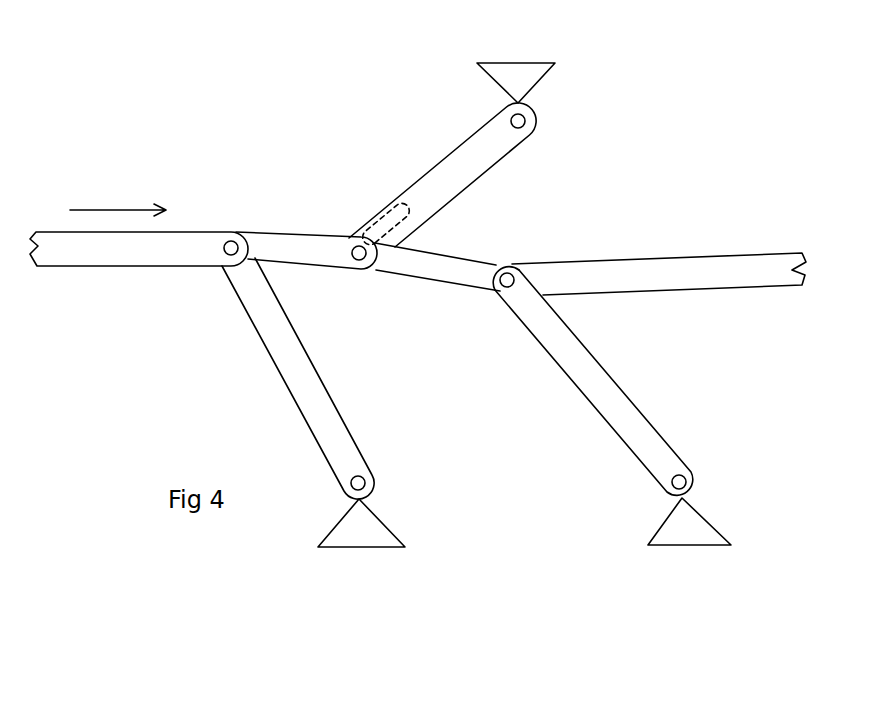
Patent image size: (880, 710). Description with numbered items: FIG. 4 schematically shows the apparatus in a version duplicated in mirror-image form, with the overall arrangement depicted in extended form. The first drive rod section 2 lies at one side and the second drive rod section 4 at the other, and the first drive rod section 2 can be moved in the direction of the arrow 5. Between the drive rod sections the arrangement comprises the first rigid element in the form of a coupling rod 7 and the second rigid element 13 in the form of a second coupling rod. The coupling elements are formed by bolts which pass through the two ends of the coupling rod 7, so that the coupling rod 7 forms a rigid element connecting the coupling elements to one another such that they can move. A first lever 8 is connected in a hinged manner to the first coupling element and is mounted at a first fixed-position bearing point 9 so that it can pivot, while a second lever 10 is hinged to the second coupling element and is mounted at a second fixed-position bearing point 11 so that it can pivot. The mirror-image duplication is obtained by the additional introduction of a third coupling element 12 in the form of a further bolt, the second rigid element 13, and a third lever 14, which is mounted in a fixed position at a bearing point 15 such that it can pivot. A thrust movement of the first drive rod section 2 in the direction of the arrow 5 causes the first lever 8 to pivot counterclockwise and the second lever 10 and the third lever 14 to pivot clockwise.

The first drive rod section 2 is at (100, 258).
The second drive rod section 4 is at (681, 283).
The arrow 5 is at (110, 210).
The coupling rod 7 is at (433, 269).
The first lever 8 is at (460, 187).
The first fixed-position bearing point 9 is at (526, 121).
The second lever 10 is at (623, 395).
The second fixed-position bearing point 11 is at (686, 480).
The third coupling element 12 is at (233, 242).
The second rigid element 13 is at (303, 258).
The third lever 14 is at (273, 365).
The bearing point 15 is at (371, 477).